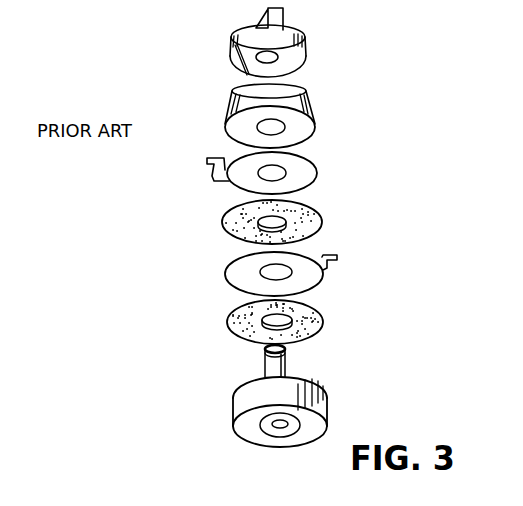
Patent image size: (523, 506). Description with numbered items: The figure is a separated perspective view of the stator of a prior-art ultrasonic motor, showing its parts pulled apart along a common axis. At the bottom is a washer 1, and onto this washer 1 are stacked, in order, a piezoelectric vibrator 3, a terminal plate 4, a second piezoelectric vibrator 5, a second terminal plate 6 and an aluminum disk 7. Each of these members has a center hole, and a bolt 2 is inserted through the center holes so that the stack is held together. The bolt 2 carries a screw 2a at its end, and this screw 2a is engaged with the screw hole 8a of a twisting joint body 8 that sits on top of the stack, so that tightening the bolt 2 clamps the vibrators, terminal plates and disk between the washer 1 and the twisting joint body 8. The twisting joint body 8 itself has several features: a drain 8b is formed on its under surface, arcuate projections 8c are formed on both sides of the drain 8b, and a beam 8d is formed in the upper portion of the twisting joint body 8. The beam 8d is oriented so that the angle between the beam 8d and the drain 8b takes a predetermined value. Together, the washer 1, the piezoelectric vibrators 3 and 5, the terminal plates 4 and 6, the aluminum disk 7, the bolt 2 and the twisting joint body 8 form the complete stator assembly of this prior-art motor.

The washer 1 is at (320, 407).
The bolt 2 is at (288, 362).
The screw 2a is at (265, 352).
The piezoelectric vibrator 3 is at (323, 313).
The terminal plate 4 is at (326, 272).
The piezoelectric vibrator 5 is at (318, 209).
The terminal plate 6 is at (313, 171).
The aluminum disk 7 is at (308, 100).
The twisting joint body 8 is at (308, 49).
The screw hole 8a is at (270, 58).
The drain 8b is at (248, 50).
The arcuate projections 8c is at (236, 62).
The beam 8d is at (284, 13).